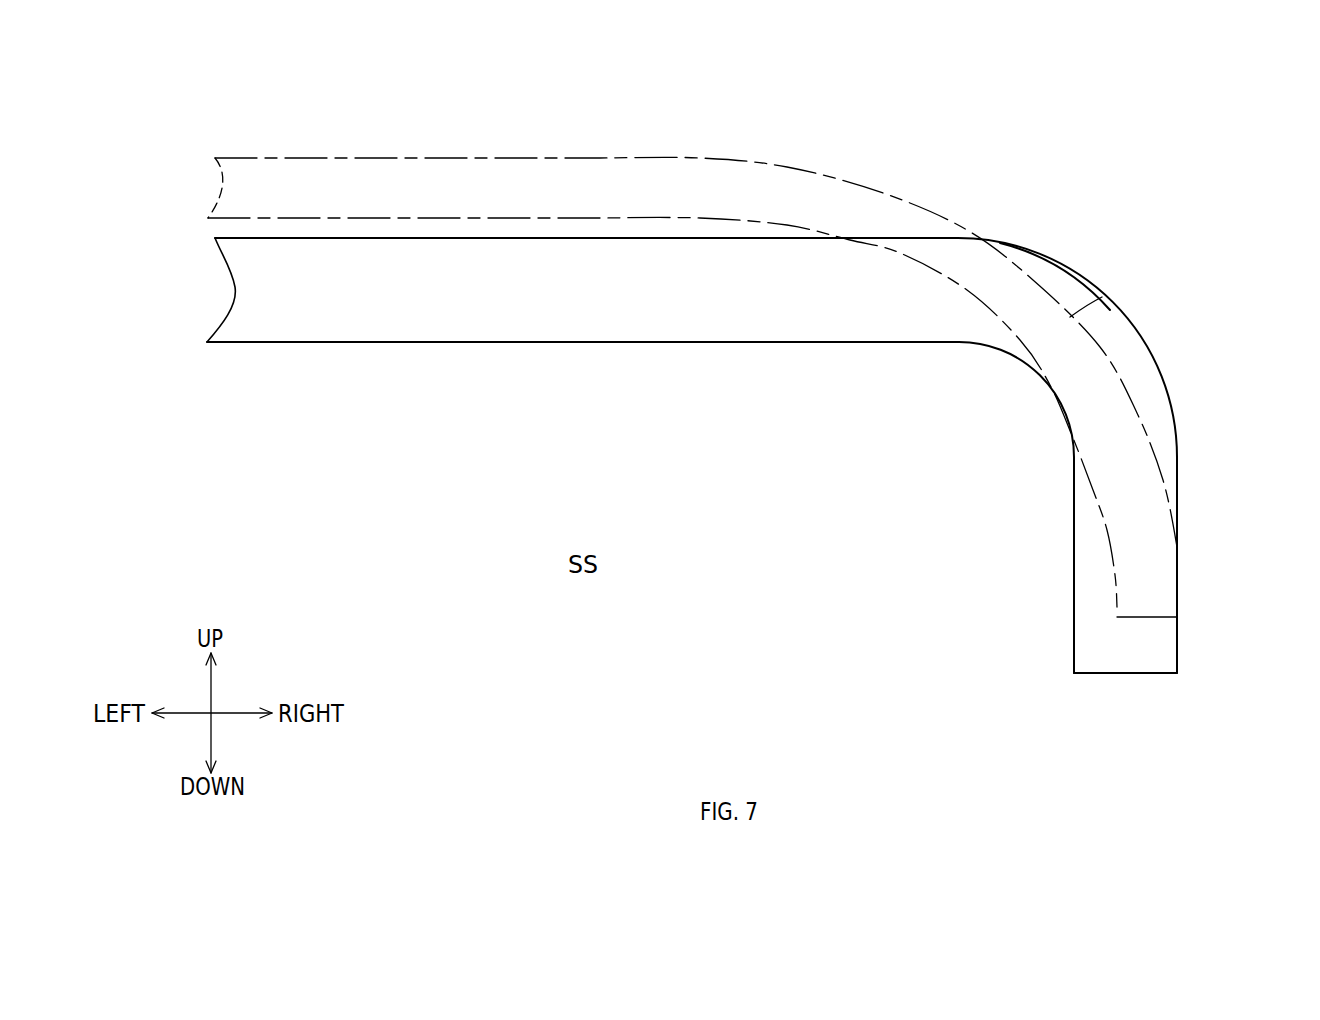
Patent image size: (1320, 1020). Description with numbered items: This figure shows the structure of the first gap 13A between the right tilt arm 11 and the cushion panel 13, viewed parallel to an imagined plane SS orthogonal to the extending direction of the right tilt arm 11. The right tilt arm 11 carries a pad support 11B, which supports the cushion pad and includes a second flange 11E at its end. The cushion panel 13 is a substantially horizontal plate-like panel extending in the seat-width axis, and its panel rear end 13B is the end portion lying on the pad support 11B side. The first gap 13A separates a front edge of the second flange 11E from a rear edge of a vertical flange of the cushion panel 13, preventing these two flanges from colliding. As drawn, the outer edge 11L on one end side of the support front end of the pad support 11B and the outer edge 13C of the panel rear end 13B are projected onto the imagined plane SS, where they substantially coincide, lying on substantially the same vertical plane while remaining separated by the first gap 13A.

The right tilt arm 11 is at (435, 342).
The pad support 11B is at (518, 342).
The second flange 11E is at (1074, 608).
The outer edge 11L is at (1177, 484).
The cushion panel 13 is at (666, 158).
The first gap 13A is at (1054, 256).
The panel rear end 13B is at (1163, 601).
The outer edge 13C is at (1102, 297).